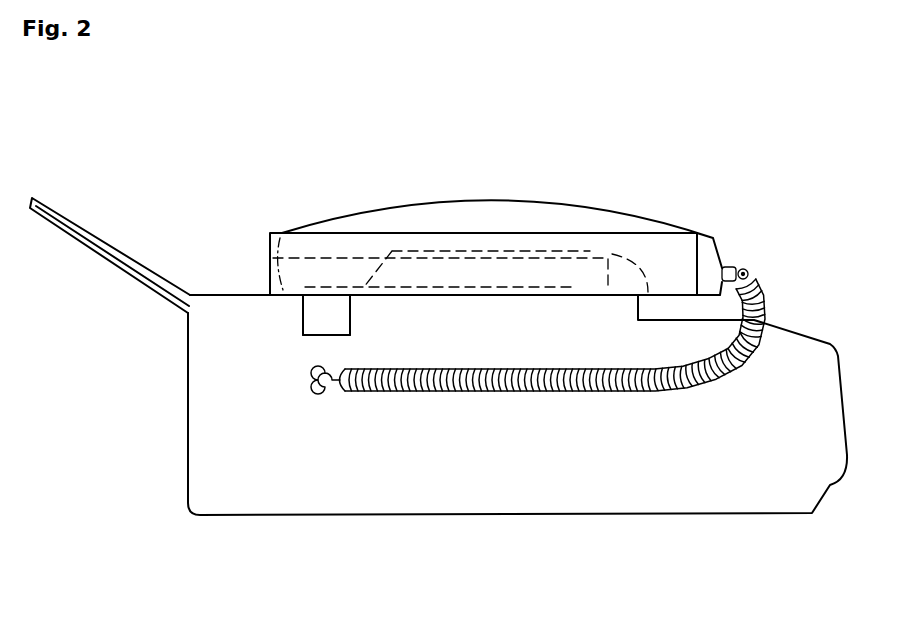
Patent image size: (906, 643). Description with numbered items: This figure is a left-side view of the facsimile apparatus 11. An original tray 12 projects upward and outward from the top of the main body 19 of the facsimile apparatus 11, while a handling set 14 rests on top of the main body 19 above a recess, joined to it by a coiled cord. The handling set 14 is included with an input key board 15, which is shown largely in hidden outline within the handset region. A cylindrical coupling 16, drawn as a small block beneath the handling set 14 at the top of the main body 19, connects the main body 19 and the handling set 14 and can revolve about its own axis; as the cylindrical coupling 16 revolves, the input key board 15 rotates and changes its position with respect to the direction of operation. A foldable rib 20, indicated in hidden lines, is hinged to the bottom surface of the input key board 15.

The facsimile apparatus 11 is at (366, 584).
The original tray 12 is at (79, 227).
The handling set 14 is at (628, 227).
The input key board 15 is at (588, 280).
The cylindrical coupling 16 is at (317, 320).
The main body 19 is at (200, 440).
The foldable rib 20 is at (448, 291).